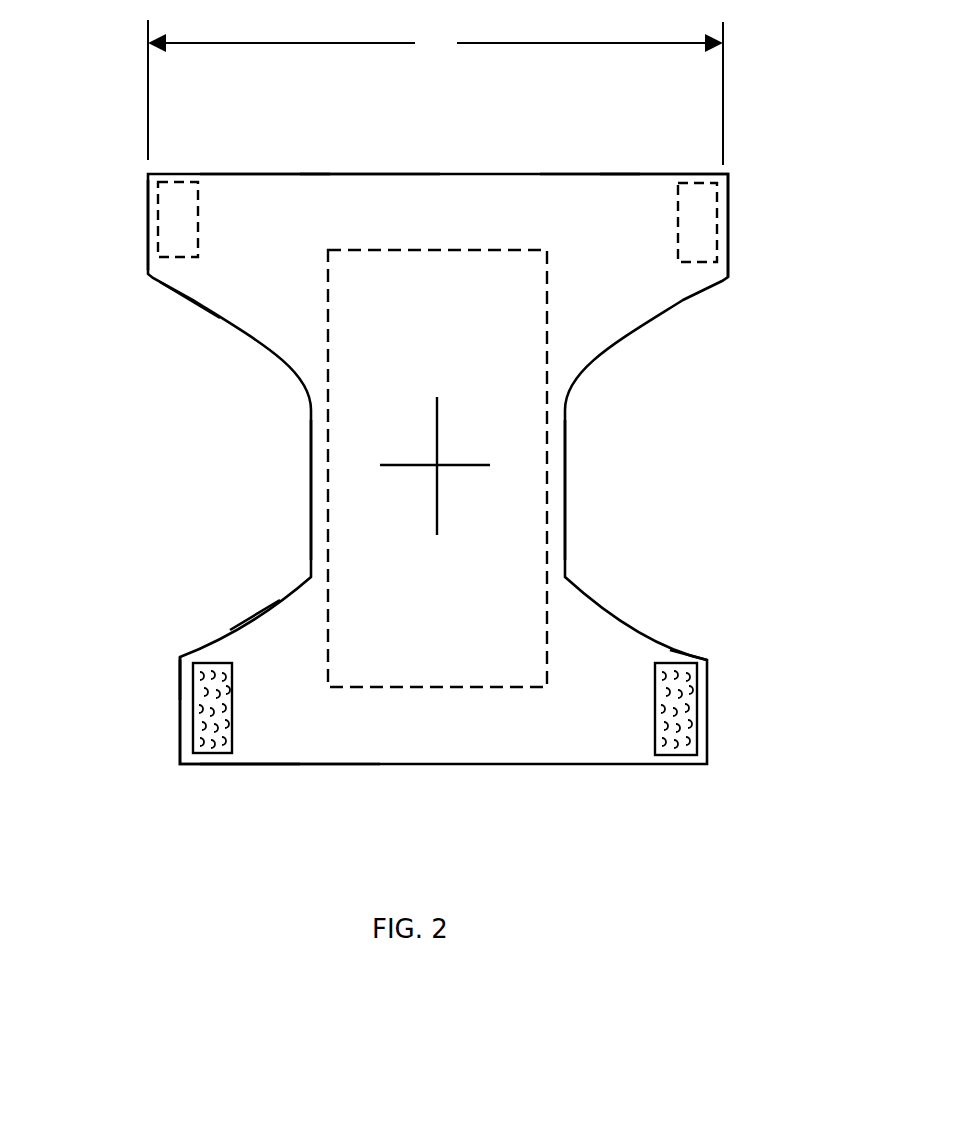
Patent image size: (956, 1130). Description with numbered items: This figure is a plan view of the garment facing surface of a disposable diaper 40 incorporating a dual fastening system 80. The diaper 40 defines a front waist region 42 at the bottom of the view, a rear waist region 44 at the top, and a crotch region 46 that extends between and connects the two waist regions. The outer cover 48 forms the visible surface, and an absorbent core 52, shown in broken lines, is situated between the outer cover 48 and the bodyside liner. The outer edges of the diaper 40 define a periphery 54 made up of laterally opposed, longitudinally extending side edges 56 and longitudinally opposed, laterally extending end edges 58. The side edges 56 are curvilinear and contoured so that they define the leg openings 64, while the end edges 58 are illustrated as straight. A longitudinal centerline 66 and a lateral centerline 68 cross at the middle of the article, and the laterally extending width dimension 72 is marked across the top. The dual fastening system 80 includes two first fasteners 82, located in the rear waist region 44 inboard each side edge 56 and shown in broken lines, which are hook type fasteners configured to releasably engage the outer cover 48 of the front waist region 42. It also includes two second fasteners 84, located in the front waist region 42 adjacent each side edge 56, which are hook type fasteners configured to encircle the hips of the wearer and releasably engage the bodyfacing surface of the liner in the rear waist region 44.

The diaper 40 is at (600, 780).
The front waist region 42 is at (158, 723).
The rear waist region 44 is at (765, 207).
The crotch region 46 is at (235, 460).
The outer cover 48 is at (263, 190).
The absorbent core 52 is at (348, 375).
The periphery 54 is at (590, 173).
The side edges 56 is at (193, 300).
The end edges 58 is at (343, 173).
The leg openings 64 is at (605, 460).
The longitudinal centerline 66 is at (437, 432).
The lateral centerline 68 is at (398, 467).
The width dimension 72 is at (435, 92).
The dual fastening system 80 is at (138, 184).
The first fasteners 82 is at (147, 230).
The second fasteners 84 is at (197, 678).